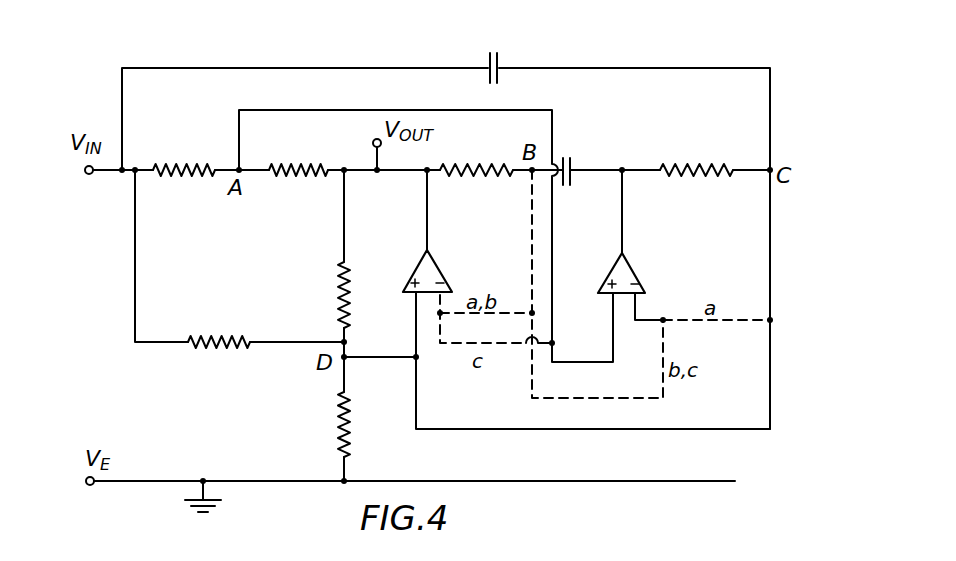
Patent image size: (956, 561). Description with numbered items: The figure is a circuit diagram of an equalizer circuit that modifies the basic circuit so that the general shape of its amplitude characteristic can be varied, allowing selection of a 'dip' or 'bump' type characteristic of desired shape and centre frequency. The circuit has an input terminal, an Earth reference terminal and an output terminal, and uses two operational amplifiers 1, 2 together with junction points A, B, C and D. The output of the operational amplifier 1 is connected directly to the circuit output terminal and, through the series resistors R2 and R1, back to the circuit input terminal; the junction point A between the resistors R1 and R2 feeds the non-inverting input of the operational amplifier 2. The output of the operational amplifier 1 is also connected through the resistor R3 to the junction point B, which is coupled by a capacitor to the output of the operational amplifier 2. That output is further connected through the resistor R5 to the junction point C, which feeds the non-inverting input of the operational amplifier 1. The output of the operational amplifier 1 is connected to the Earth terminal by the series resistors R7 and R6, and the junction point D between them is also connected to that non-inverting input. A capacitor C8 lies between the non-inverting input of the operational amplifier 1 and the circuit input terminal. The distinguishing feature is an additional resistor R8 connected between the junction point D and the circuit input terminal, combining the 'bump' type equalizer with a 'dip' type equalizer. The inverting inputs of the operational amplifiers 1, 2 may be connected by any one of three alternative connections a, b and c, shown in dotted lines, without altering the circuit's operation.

The operational amplifier 1 is at (441, 272).
The operational amplifier 2 is at (636, 275).
The resistor R1 is at (184, 187).
The resistor R2 is at (298, 187).
The resistor R3 is at (476, 187).
The resistor R5 is at (696, 187).
The resistor R6 is at (325, 424).
The resistor R7 is at (325, 295).
The additional resistor R8 is at (219, 359).
The capacitor C8 is at (508, 58).